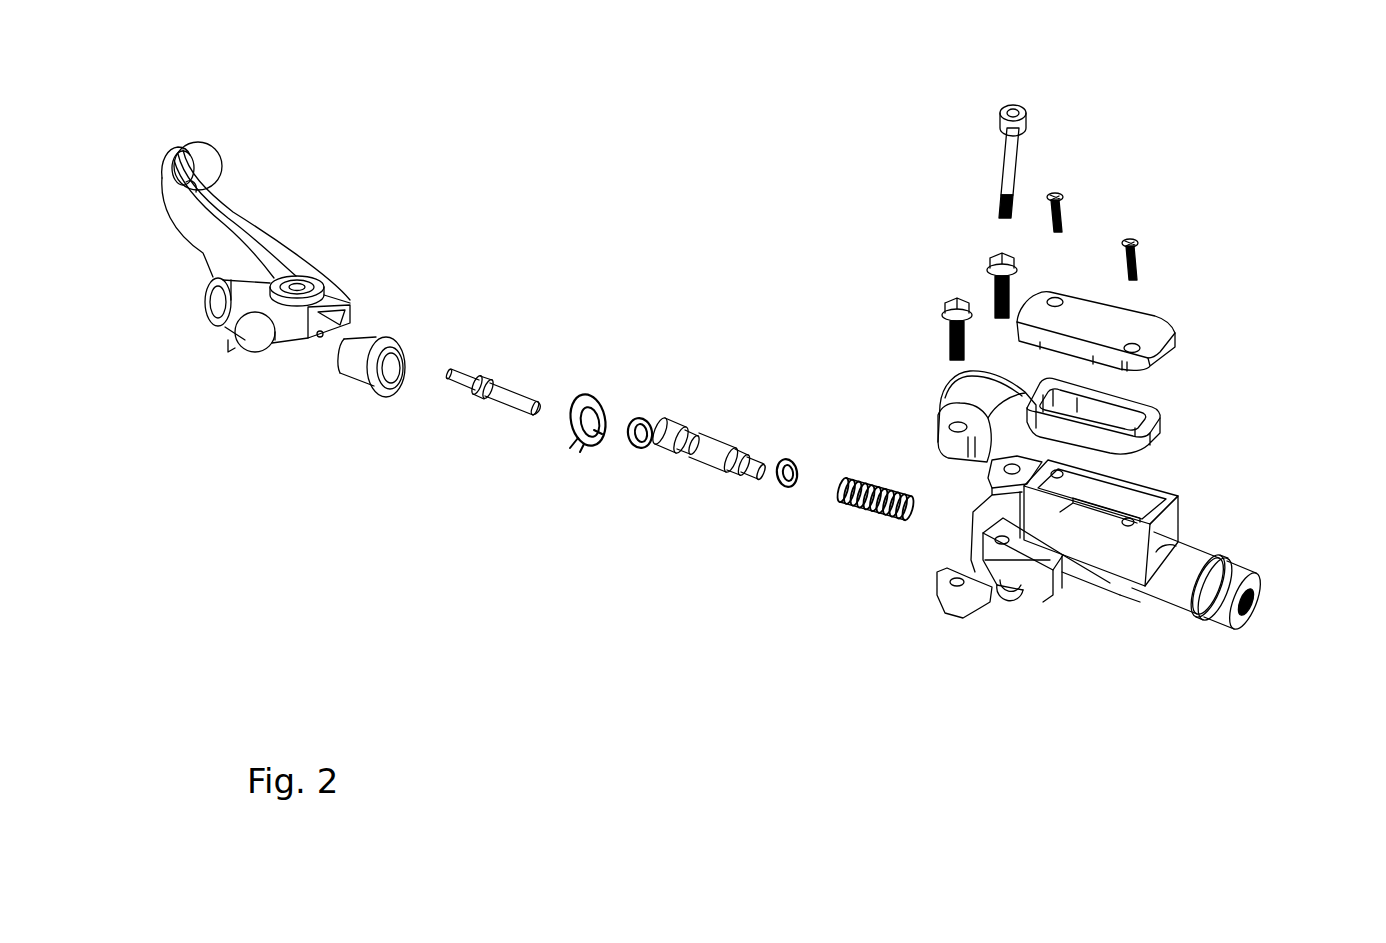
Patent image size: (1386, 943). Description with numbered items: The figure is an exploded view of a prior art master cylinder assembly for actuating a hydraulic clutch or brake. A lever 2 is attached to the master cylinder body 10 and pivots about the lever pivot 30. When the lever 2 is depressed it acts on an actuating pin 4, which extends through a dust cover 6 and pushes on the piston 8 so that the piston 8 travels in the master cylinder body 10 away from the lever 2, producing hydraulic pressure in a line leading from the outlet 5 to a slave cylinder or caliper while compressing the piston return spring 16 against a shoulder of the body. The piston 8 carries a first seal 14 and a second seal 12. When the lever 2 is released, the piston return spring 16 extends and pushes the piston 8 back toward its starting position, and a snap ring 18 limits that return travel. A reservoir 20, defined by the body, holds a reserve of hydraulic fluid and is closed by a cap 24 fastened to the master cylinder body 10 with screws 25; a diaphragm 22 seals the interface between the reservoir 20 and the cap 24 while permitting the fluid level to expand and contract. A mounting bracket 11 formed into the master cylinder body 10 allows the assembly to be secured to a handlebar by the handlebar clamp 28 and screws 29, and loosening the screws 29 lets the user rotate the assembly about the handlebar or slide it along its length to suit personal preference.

The lever 2 is at (272, 253).
The actuating pin 4 is at (518, 398).
The outlet 5 is at (1240, 575).
The dust cover 6 is at (365, 342).
The piston 8 is at (676, 430).
The master cylinder body 10 is at (1030, 606).
The mounting bracket 11 is at (1002, 592).
The second seal 12 is at (647, 418).
The first seal 14 is at (793, 457).
The piston return spring 16 is at (875, 487).
The snap ring 18 is at (593, 398).
The reservoir 20 is at (1118, 498).
The diaphragm 22 is at (1163, 412).
The cap 24 is at (1143, 318).
The screws 25 is at (1133, 240).
The handlebar clamp 28 is at (953, 448).
The screws 29 is at (950, 307).
The lever pivot 30 is at (1022, 148).